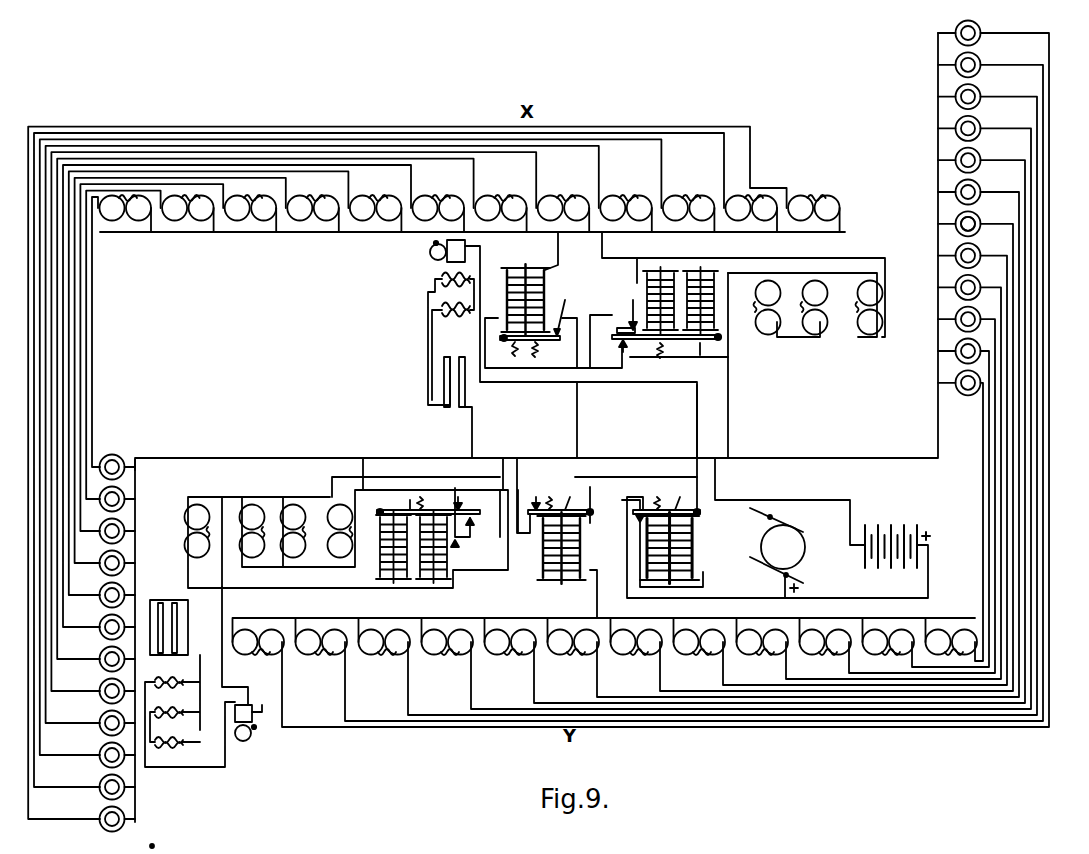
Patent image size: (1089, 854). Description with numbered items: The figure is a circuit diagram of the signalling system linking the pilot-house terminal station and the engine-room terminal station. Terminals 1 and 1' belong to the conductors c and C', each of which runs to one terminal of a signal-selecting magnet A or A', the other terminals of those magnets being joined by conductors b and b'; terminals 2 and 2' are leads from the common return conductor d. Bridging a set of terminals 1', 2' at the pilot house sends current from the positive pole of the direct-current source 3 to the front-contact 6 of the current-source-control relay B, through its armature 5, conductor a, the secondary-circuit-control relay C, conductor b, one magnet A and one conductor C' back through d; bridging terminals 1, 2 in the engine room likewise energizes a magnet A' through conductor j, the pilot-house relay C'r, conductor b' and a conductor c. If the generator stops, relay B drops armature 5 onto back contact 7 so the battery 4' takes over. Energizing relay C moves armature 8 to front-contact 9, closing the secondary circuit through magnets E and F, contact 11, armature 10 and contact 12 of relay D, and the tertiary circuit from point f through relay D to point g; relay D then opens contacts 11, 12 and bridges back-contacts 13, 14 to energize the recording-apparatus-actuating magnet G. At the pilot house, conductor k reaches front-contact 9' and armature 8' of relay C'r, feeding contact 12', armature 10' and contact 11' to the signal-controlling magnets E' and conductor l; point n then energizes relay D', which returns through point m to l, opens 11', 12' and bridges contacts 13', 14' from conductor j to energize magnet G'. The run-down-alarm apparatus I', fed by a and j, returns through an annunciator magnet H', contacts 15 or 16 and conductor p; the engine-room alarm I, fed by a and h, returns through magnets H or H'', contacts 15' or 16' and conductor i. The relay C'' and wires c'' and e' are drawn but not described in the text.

The terminals of conductors c 1 is at (109, 650).
The terminals of leads from common return conductor d 2 is at (531, 424).
The terminals of conductors c' 1' is at (966, 198).
The terminals of leads from common return conductor d 2' is at (940, 231).
The direct-current source 3 is at (805, 547).
The storage battery 4' is at (897, 556).
The armature of relay B 5 is at (667, 500).
The front-contact of relay B 6 is at (636, 520).
The back contact of relay B 7 is at (623, 501).
The armature of relay C 8 is at (558, 500).
The front-contact of relay C 9 is at (532, 501).
The armature of relay D 10 is at (398, 501).
The contact of relay D 11 is at (429, 501).
The contact of relay D 12 is at (465, 501).
The back-contact of relay D 13 is at (474, 566).
The back-contact of relay D 14 is at (478, 536).
The contacts for run-down-alarm apparatus I' 15 is at (443, 373).
The contacts for run-down-alarm apparatus I' 16 is at (464, 373).
The armature of relay C' 8' is at (532, 351).
The front-contact of relay C' 9' is at (569, 310).
The armature of relay D' 10' is at (694, 351).
The contact of relay D' 11' is at (654, 359).
The contact of relay D' 12' is at (615, 350).
The contact of relay D' 13' is at (617, 308).
The contact of relay D' 14' is at (618, 296).
The contacts for run-down-alarm apparatus I 15' is at (149, 636).
The contacts for run-down-alarm apparatus I 16' is at (169, 634).
The signal-selecting magnets A is at (605, 648).
The signal-selecting magnets A' is at (470, 196).
The current-source-control relay B is at (692, 548).
The secondary-circuit-control relay C is at (472, 200).
The conductors C' is at (676, 389).
The secondary-circuit-control relay C'r is at (560, 559).
The relay C'' is at (548, 300).
The relay D is at (428, 560).
The relay D' is at (659, 304).
The controlling magnets E is at (329, 534).
The signal-controlling magnets E' is at (791, 321).
The magnet F is at (273, 534).
The recording-apparatus-actuating magnet G is at (197, 538).
The recording-apparatus-actuating magnet G' is at (864, 321).
The annunciator magnets H is at (190, 711).
The annunciator magnets H' is at (433, 339).
The annunciator magnet H'' is at (144, 676).
The run-down-alarm apparatus I is at (248, 732).
The run-down-alarm apparatus I' is at (427, 251).
The conductor a is at (514, 478).
The conductor b is at (777, 556).
The conductor b' is at (740, 284).
The conductors c is at (407, 468).
The wire c'' is at (581, 352).
The common return conductor d is at (140, 624).
The wire e' is at (526, 538).
The point f is at (362, 462).
The point g is at (521, 495).
The conductor h is at (235, 646).
The conductor i is at (138, 522).
The conductor j is at (692, 392).
The conductor k is at (585, 420).
The conductor l is at (732, 365).
The point m is at (728, 290).
The point n is at (590, 375).
The conductor p is at (477, 432).